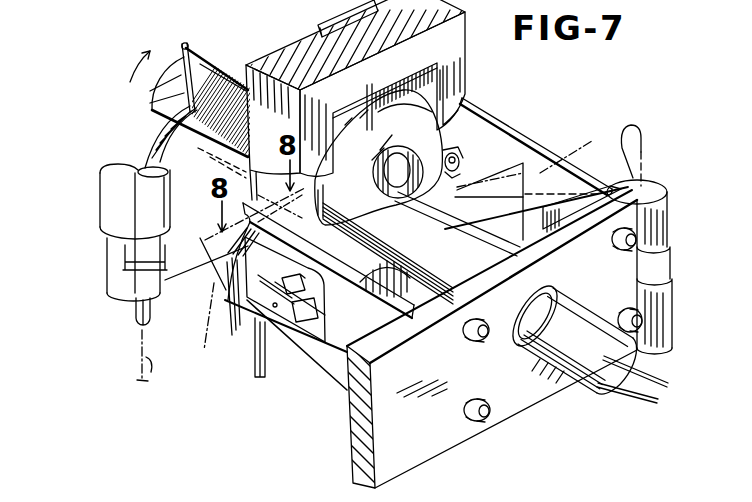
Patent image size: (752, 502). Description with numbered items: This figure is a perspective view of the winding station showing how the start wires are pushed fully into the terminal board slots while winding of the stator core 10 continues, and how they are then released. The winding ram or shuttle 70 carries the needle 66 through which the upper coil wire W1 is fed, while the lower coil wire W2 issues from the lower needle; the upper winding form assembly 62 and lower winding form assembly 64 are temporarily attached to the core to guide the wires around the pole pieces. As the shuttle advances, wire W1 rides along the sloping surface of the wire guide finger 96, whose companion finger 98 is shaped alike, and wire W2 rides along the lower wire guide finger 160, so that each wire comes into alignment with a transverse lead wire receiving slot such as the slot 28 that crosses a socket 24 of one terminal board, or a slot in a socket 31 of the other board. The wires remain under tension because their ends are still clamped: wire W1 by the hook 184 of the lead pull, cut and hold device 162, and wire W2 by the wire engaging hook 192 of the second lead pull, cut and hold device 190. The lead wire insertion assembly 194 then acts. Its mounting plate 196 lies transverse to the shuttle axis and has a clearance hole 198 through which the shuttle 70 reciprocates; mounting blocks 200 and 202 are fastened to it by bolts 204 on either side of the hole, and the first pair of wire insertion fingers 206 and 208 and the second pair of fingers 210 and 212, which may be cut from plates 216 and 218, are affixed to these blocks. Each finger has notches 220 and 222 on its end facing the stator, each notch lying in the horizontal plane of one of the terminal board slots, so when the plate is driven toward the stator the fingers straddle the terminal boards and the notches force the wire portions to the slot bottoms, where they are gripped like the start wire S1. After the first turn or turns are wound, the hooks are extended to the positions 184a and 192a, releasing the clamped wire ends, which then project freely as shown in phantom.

The stator core 10 is at (161, 141).
The socket 24 is at (310, 296).
The transverse lead wire receiving slot 28 is at (280, 245).
The socket 31 is at (448, 163).
The upper winding form assembly 62 is at (366, 163).
The lower winding form assembly 64 is at (388, 245).
The needle 66 is at (184, 45).
The winding ram or shuttle 70 is at (578, 386).
The wire guide finger 96 is at (333, 190).
The wire guide finger 98 is at (470, 108).
The wire guide finger 160 is at (365, 100).
The lead pull, cut and hold device 162 is at (110, 277).
The hook 184 is at (133, 316).
The extended position of hook 184a is at (132, 367).
The lead pull, cut and hold device 190 is at (670, 225).
The wire engaging hook 192 is at (646, 190).
The extended position of hook 192a is at (644, 142).
The lead wire insertion assembly 194 is at (324, 391).
The mounting plate 196 is at (430, 452).
The clearance hole 198 is at (575, 290).
The mounting block 200 is at (428, 296).
The mounting block 202 is at (578, 200).
The bolts 204 is at (483, 352).
The wire insertion finger 206 is at (376, 208).
The wire insertion finger 208 is at (290, 351).
The wire insertion finger 210 is at (510, 134).
The wire insertion finger 212 is at (492, 237).
The plate 216 is at (380, 322).
The plate 218 is at (555, 170).
The notch 220 is at (238, 322).
The notch 222 is at (254, 361).
The wire for winding the upper coil W1 is at (200, 68).
The wire for winding the lower coil W2 is at (483, 195).
The stator coil start wire S1 is at (190, 290).